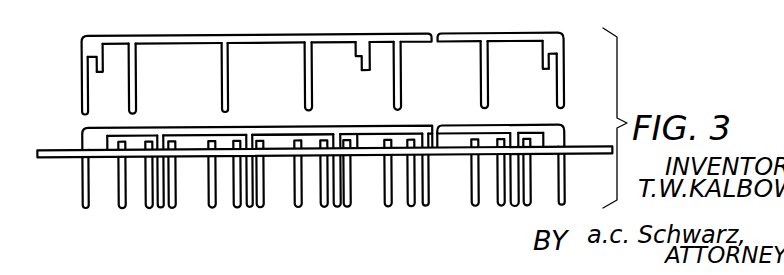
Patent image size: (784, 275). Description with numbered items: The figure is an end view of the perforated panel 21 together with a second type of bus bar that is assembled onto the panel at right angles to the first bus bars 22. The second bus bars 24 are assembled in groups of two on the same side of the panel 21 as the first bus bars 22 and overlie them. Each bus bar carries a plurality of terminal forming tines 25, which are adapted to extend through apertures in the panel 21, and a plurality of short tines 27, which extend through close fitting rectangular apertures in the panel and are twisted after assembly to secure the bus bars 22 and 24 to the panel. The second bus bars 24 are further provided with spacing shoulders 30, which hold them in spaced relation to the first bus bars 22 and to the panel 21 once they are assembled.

The perforated panel 21 is at (55, 182).
The first bus bars 22 is at (272, 127).
The second bus bars 24 is at (90, 40).
The terminal forming tines 25 is at (82, 103).
The short tines 27 is at (103, 74).
The spacing shoulders 30 is at (90, 64).